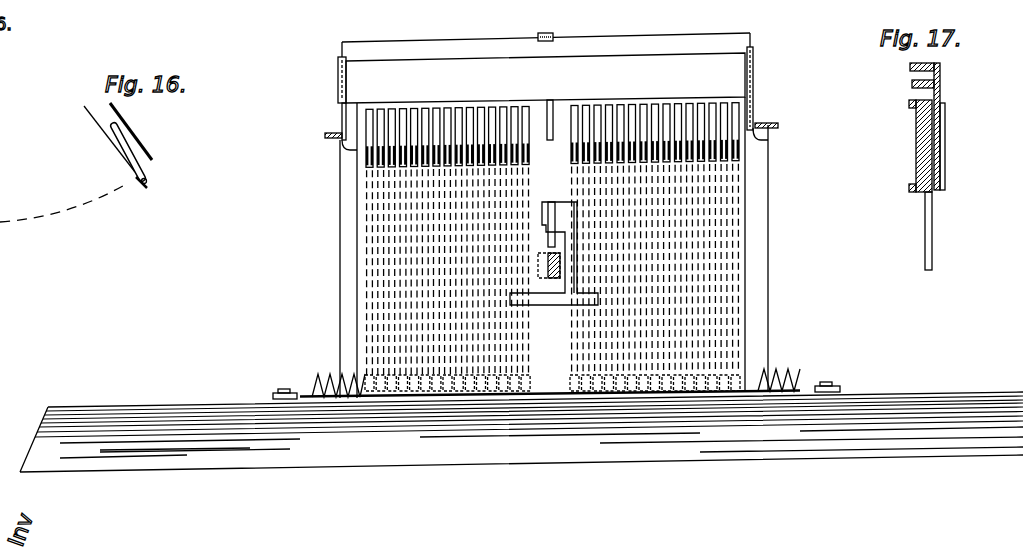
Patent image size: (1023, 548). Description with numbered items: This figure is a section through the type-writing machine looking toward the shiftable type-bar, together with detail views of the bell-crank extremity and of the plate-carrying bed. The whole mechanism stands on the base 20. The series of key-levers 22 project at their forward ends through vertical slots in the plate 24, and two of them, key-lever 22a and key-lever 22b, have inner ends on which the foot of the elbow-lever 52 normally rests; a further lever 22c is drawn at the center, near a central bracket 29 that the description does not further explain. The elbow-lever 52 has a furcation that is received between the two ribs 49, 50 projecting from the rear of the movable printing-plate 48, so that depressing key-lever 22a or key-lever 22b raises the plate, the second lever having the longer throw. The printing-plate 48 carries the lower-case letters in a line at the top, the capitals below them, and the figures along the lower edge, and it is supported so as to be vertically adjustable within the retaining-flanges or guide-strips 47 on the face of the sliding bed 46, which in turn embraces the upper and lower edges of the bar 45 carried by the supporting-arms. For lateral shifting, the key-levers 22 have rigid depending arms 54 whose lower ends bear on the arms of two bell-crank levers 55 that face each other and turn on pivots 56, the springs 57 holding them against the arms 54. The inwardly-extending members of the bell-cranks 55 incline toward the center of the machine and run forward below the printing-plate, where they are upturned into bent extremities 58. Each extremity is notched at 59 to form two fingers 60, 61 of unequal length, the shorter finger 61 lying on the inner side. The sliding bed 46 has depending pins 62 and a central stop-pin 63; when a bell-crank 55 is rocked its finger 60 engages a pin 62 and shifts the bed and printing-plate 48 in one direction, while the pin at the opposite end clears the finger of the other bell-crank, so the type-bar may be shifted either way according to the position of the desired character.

In FIG. 6, the base 20 is at (640, 440).
In FIG. 6, the key-levers 22 is at (374, 157).
In FIG. 6, the key-lever 22a is at (548, 162).
In FIG. 6, the key-lever 22b is at (550, 162).
In FIG. 6, the slat portion c 22c is at (548, 166).
In FIG. 6, the plate 24 is at (366, 258).
In FIG. 6, the central guide bracket 29 is at (547, 268).
In FIG. 17, the bar 45 is at (916, 128).
In FIG. 17, the sliding bed 46 is at (918, 160).
In FIG. 6, the retaining-flanges or guide-strips 47 is at (338, 78).
In FIG. 17, the retaining-flanges or guide-strips 47 is at (946, 160).
In FIG. 6, the printing-plate 48 is at (459, 67).
In FIG. 17, the printing-plate 48 is at (942, 135).
In FIG. 17, the rib 49 is at (910, 67).
In FIG. 17, the rib 50 is at (912, 84).
In FIG. 6, the elbow-lever 52 is at (549, 30).
In FIG. 6, the depending arms 54 is at (366, 307).
In FIG. 6, the bell-crank levers 55 is at (340, 227).
In FIG. 6, the pivots 56 is at (290, 385).
In FIG. 6, the springs 57 is at (334, 380).
In FIG. 16, the bent extremities 58 is at (104, 132).
In FIG. 16, the notch 59 is at (128, 142).
In FIG. 6, the finger 60 is at (342, 150).
In FIG. 16, the finger 60 is at (146, 173).
In FIG. 6, the finger 61 is at (558, 130).
In FIG. 16, the finger 61 is at (142, 184).
In FIG. 6, the depending pins 62 is at (340, 125).
In FIG. 16, the depending pins 62 is at (148, 182).
In FIG. 17, the depending pins 62 is at (932, 220).
In FIG. 6, the central stop-pin 63 is at (563, 120).